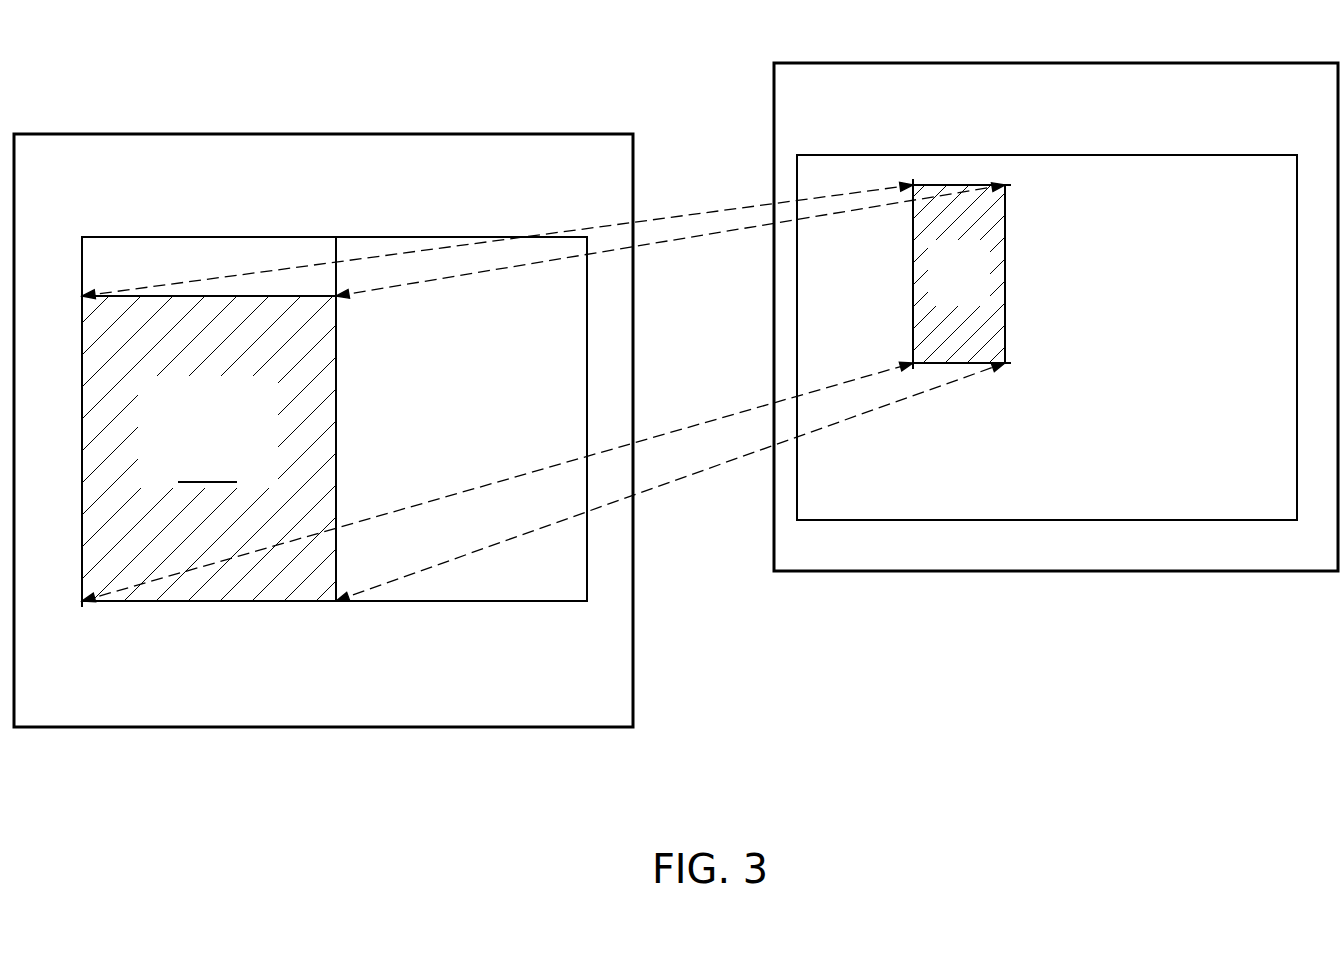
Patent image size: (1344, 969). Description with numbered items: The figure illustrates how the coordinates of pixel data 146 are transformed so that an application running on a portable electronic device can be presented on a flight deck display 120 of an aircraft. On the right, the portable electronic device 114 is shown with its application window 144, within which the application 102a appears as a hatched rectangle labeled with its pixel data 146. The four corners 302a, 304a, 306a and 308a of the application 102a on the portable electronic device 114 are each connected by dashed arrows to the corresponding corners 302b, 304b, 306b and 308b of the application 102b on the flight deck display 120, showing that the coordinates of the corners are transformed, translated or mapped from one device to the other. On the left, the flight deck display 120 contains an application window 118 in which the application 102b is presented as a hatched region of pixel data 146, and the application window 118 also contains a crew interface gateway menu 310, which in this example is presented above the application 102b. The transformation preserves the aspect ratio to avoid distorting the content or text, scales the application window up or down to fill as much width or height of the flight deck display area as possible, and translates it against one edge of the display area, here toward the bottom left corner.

The flight deck display 120 is at (346, 134).
The application window 118 is at (423, 237).
The crew interface gateway (CIG) menu 310 is at (262, 237).
The application 102b is at (336, 390).
The pixel data 146 is at (583, 380).
The corner of the application on the flight deck display 302b is at (82, 296).
The corner of the application on the flight deck display 304b is at (336, 296).
The corner of the application on the flight deck display 306b is at (336, 601).
The corner of the application on the flight deck display 308b is at (82, 601).
The portable electronic device (PED) 114 is at (1040, 63).
The application window 144 is at (1142, 155).
The application 102a is at (1005, 243).
The corner of the application on the PED 302a is at (913, 185).
The corner of the application on the PED 304a is at (1005, 185).
The corner of the application on the PED 306a is at (1005, 363).
The corner of the application on the PED 308a is at (913, 363).